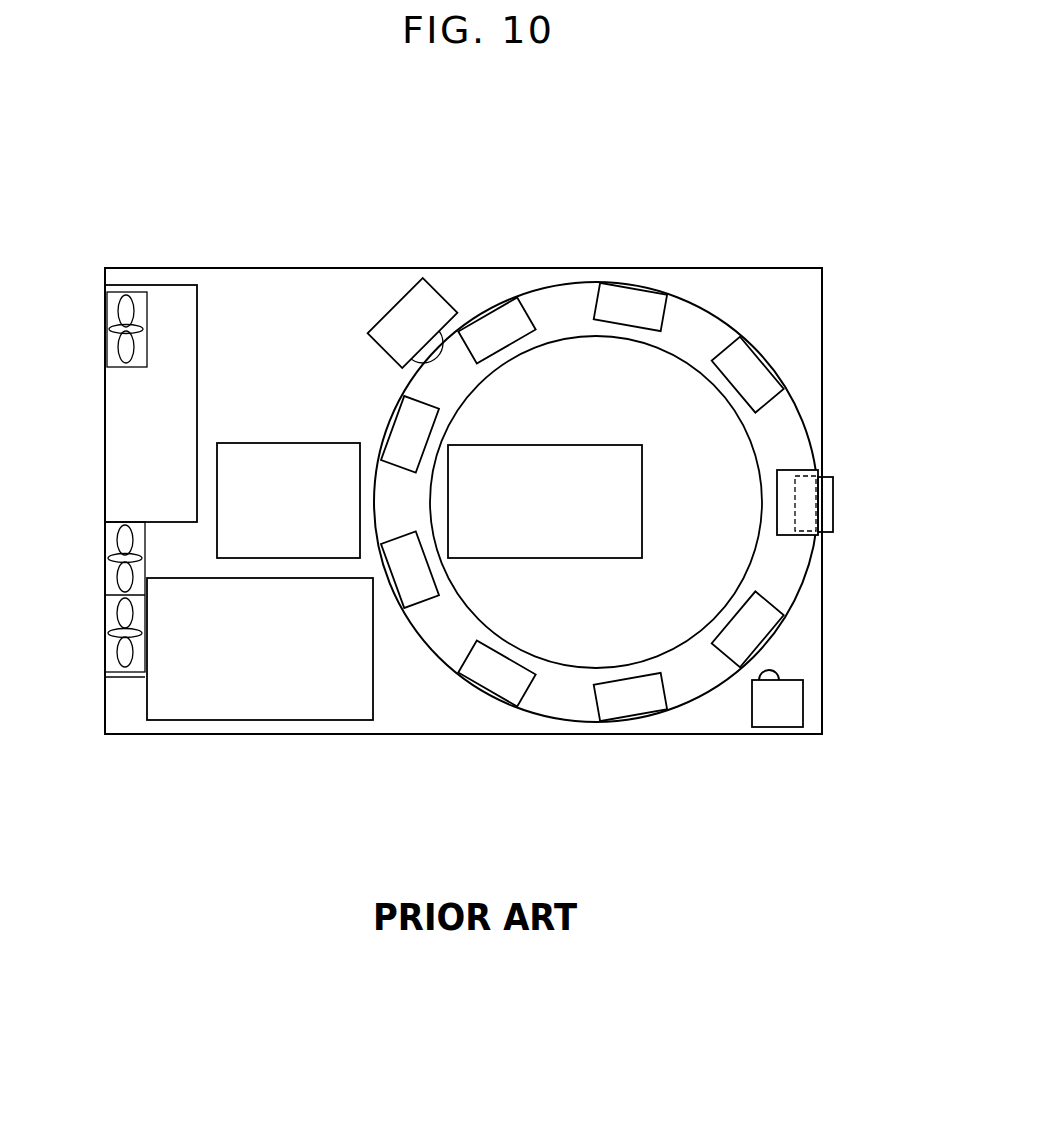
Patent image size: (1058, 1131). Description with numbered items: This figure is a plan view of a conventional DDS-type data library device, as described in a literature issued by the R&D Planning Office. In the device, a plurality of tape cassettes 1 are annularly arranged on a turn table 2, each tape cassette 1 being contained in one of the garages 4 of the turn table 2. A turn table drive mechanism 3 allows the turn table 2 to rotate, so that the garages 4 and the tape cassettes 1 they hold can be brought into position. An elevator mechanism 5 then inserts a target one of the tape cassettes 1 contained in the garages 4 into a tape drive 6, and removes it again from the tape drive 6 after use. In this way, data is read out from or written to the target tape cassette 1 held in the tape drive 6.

The tape cassette 1 is at (833, 505).
The turn table 2 is at (697, 327).
The turn table drive mechanism 3 is at (403, 313).
The garage 4 is at (490, 330).
The elevator mechanism 5 is at (281, 450).
The tape drive 6 is at (560, 447).